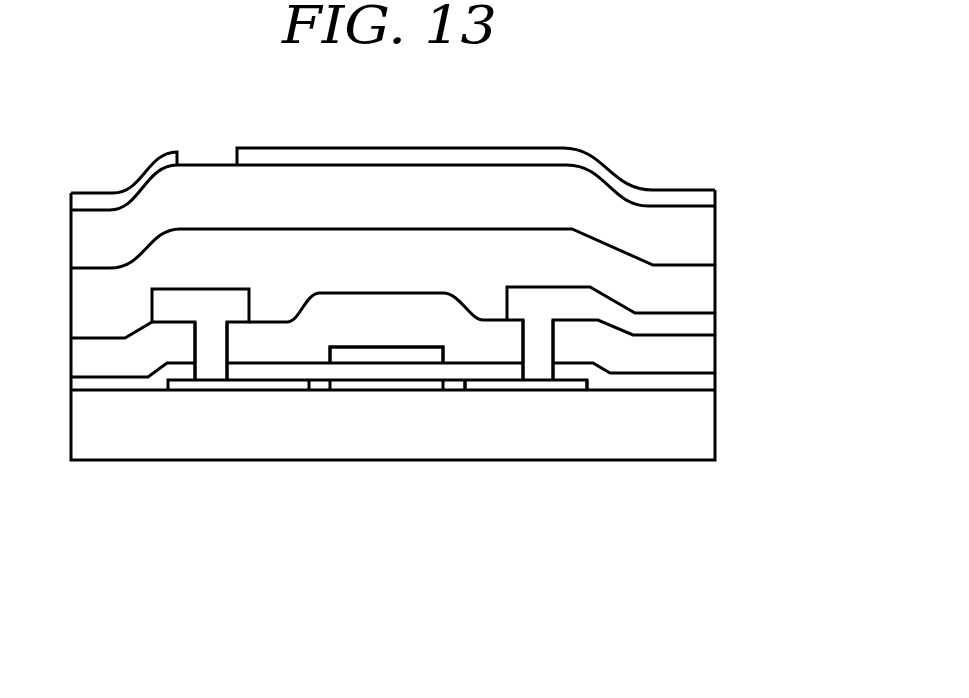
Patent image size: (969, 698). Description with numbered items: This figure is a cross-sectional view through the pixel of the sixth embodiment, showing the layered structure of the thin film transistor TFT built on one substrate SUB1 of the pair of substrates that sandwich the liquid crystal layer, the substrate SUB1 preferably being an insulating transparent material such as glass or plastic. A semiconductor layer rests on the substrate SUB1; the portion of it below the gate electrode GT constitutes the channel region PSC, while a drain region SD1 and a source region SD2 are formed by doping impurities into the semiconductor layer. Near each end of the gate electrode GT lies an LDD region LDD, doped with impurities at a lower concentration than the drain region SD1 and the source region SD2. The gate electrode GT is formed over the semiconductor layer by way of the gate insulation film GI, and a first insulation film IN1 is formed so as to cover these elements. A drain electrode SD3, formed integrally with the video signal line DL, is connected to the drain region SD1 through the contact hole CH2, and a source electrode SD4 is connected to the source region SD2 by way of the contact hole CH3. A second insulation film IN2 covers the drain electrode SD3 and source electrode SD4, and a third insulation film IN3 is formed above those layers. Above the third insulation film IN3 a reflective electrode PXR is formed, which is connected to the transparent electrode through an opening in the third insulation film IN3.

The substrate SUB1 is at (102, 440).
The video signal line DL is at (134, 139).
The drain electrode SD3 is at (178, 296).
The source electrode SD4 is at (593, 297).
The reflective electrode PXR is at (388, 147).
The third insulation film IN3 is at (532, 195).
The second insulation film IN2 is at (273, 250).
The first insulation film IN1 is at (443, 330).
The gate insulation film GI is at (132, 385).
The gate electrode GT is at (383, 355).
The channel region PSC is at (362, 392).
The drain region SD1 is at (245, 392).
The source region SD2 is at (548, 395).
The LDD region LDD is at (320, 392).
The contact hole CH2 is at (210, 363).
The contact hole CH3 is at (548, 342).
The thin film transistor TFT is at (445, 562).